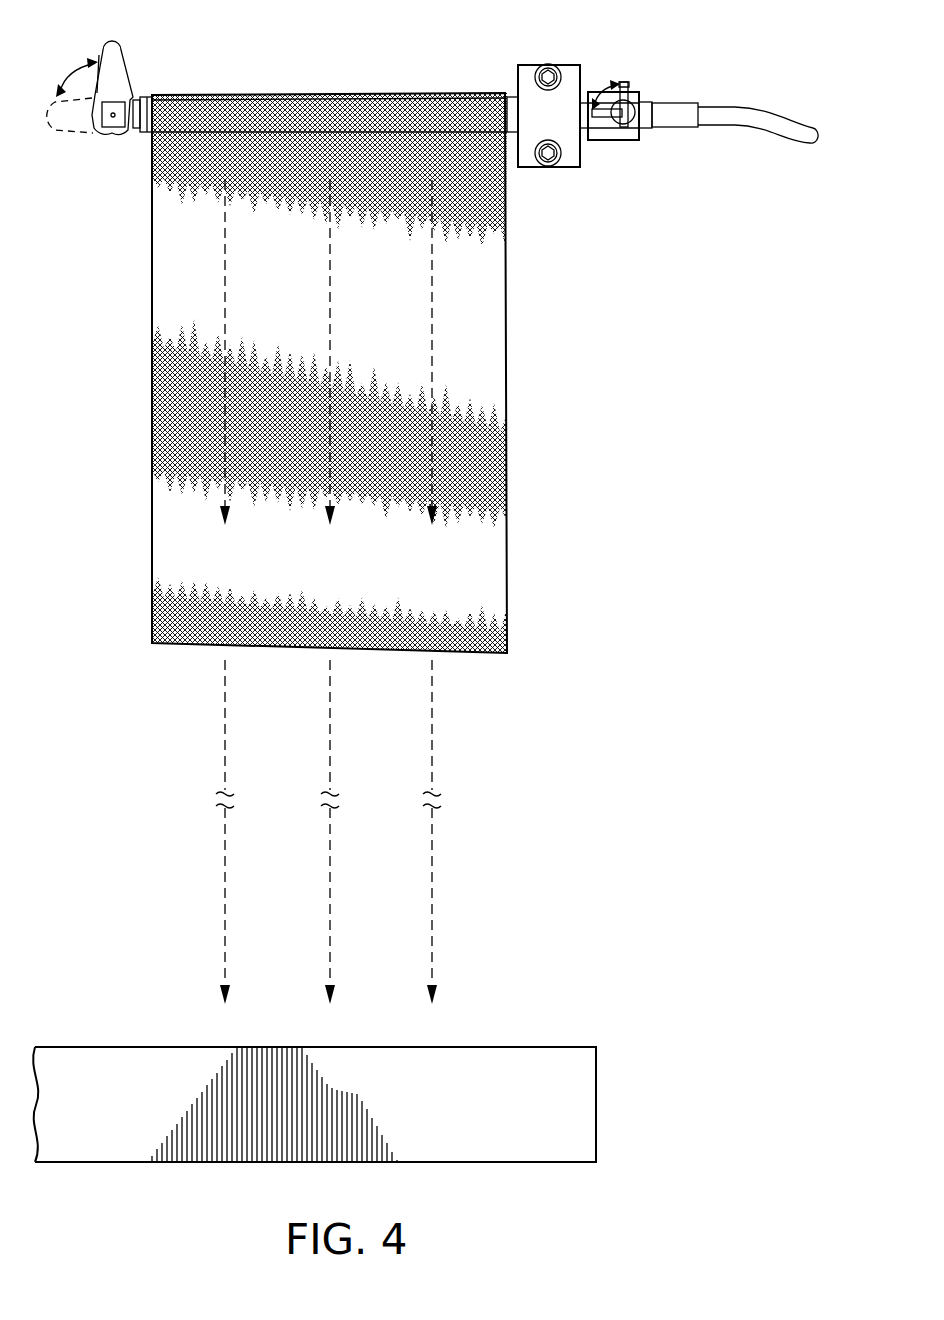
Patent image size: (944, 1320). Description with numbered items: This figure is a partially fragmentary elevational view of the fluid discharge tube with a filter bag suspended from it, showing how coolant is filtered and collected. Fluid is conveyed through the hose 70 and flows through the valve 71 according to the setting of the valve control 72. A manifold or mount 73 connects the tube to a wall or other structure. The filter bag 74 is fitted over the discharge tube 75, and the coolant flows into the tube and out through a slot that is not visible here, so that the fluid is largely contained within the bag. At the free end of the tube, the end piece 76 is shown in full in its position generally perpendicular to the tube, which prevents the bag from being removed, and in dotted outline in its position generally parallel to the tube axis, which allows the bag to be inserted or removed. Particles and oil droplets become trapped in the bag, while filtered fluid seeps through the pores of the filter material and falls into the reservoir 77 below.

The hose 70 is at (762, 113).
The valve 71 is at (620, 140).
The valve control 72 is at (624, 97).
The manifold or mount 73 is at (567, 95).
The filter bag 74 is at (512, 350).
The discharge tube 75 is at (148, 95).
The end piece 76 is at (112, 73).
The reservoir 77 is at (570, 1066).